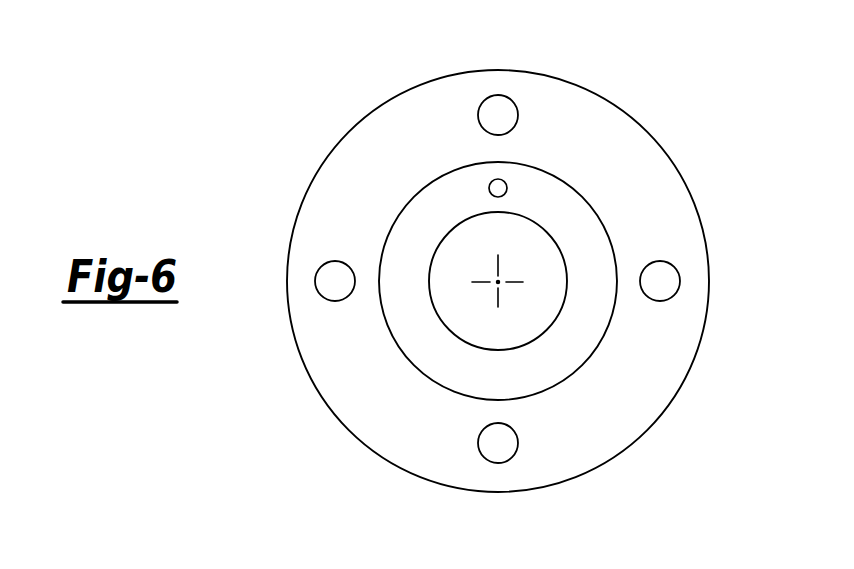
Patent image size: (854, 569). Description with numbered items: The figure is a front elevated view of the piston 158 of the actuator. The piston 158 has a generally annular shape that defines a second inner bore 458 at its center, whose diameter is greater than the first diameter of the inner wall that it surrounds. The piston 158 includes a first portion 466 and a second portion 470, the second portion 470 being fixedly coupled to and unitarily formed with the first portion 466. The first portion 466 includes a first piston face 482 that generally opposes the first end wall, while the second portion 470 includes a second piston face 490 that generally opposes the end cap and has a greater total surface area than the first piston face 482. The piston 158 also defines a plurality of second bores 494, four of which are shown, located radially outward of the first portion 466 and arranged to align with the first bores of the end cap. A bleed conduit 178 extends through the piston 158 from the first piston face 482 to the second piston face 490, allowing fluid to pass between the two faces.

The piston 158 is at (390, 85).
The bleed conduit 178 is at (488, 188).
The second inner bore 458 is at (553, 323).
The first portion 466 is at (428, 348).
The second portion 470 is at (607, 425).
The first piston face 482 is at (571, 228).
The second piston face 490 is at (410, 427).
The second bores 494 is at (497, 95).